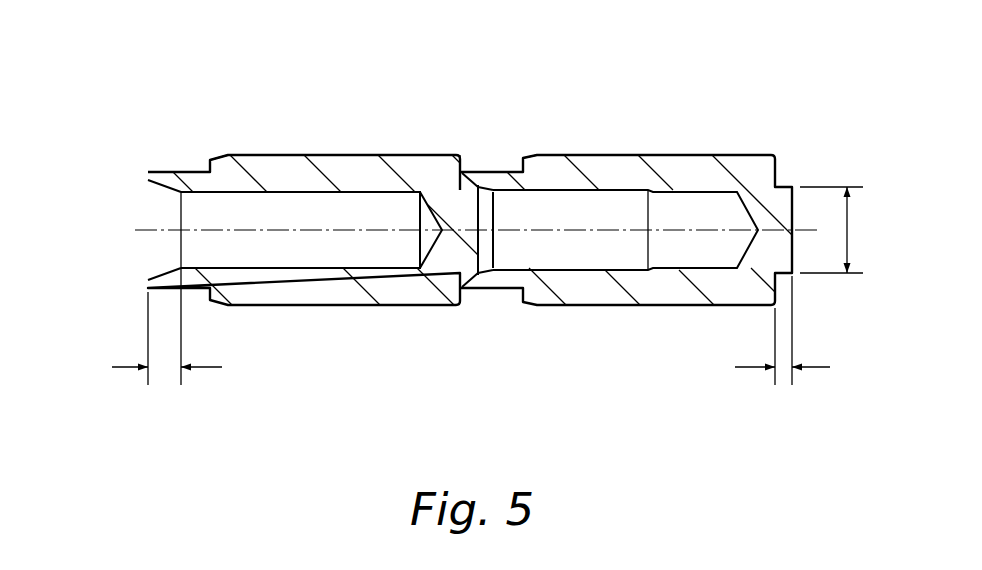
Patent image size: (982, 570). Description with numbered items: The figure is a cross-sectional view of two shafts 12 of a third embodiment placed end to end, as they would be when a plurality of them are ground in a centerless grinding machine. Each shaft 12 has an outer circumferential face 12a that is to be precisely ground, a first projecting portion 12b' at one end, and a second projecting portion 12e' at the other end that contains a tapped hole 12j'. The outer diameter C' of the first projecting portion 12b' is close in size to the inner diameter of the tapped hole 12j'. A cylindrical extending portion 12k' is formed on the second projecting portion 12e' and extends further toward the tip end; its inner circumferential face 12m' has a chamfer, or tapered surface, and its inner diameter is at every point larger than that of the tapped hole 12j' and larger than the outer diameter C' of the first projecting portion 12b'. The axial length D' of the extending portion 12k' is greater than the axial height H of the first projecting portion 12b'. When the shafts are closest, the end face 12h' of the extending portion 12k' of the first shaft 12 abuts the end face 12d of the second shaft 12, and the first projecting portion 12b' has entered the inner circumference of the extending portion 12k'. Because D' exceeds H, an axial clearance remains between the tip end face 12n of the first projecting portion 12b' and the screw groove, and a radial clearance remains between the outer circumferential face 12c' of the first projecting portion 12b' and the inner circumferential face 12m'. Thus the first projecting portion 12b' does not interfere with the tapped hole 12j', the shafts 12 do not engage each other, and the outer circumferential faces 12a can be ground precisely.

The shaft 12 is at (305, 147).
The outer circumferential face 12a is at (285, 155).
The first projecting portion 12b' is at (680, 172).
The outer circumferential face 12c' is at (664, 219).
The end face 12d is at (464, 172).
The second projecting portion 12e' is at (386, 95).
The end face 12h' is at (412, 102).
The tapped hole 12j' is at (469, 287).
The extending portion 12k' is at (320, 241).
The inner circumferential face 12m' is at (257, 261).
The tip end face 12n is at (493, 250).